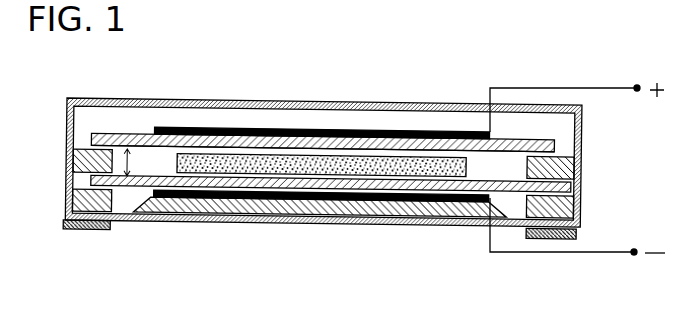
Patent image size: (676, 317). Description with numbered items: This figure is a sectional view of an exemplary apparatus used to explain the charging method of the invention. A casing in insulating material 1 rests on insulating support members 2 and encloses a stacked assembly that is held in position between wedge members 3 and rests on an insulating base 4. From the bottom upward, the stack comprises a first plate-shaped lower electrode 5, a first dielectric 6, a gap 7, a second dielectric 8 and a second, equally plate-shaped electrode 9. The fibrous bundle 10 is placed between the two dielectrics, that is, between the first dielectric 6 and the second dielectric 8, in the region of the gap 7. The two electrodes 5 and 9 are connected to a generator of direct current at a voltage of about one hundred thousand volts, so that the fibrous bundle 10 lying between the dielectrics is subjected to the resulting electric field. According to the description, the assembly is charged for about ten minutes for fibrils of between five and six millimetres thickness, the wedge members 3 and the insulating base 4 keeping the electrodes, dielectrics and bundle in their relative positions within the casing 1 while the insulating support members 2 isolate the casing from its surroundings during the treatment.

The casing in insulating material 1 is at (93, 98).
The insulating support members 2 is at (66, 227).
The wedge members 3 is at (68, 193).
The insulating base 4 is at (292, 213).
The first plate-shaped lower electrode 5 is at (437, 203).
The first dielectric 6 is at (132, 200).
The gap 7 is at (123, 150).
The second dielectric 8 is at (141, 150).
The second plate-shaped electrode 9 is at (270, 130).
The fibrous bundle 10 is at (351, 156).